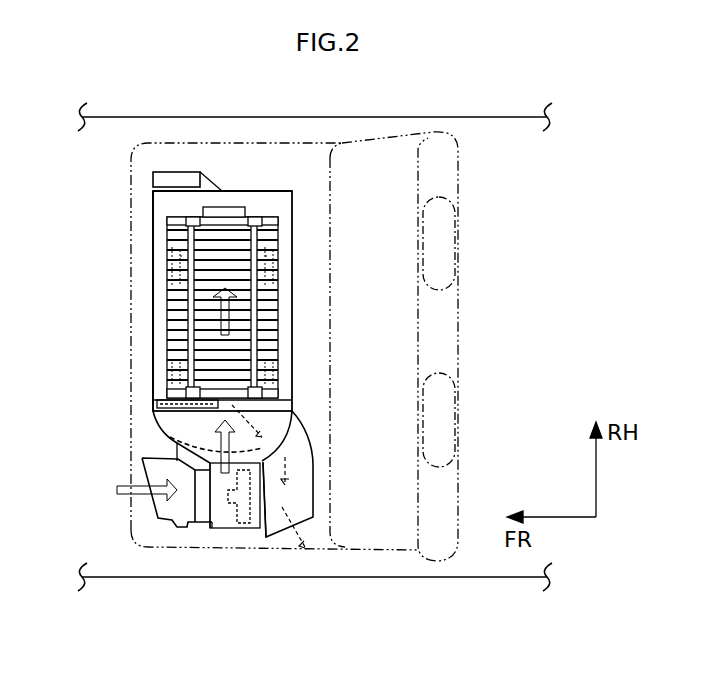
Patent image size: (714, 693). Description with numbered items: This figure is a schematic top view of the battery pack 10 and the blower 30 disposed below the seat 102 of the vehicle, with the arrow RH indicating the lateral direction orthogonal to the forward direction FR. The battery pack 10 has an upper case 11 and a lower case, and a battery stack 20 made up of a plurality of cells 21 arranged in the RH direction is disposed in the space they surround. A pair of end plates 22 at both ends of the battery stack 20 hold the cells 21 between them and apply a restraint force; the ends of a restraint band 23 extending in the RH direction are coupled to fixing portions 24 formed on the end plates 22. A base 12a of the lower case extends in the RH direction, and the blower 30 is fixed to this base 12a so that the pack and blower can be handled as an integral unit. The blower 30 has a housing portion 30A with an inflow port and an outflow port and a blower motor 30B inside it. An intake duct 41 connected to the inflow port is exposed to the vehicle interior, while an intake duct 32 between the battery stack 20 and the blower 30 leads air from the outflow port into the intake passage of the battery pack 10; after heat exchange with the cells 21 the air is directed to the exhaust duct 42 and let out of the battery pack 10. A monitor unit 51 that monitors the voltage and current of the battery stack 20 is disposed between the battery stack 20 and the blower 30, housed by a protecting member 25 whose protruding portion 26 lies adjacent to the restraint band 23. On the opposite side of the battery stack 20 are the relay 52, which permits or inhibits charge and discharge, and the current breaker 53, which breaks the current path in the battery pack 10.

The seat 102 is at (440, 143).
The battery pack 10 is at (153, 278).
The upper case 11 is at (153, 333).
The base 12a is at (176, 452).
The current breaker 53 is at (162, 181).
The relay 52 is at (236, 207).
The fixing portion 24 is at (190, 218).
The end plate 22 is at (175, 223).
The restraint band 23 is at (190, 346).
The battery stack 20 is at (167, 252).
The cell 21 is at (172, 303).
The monitor unit 51 is at (157, 403).
The protecting member 25 is at (178, 441).
The protruding portion 26 is at (166, 433).
The intake duct 32 is at (289, 434).
The exhaust duct 42 is at (307, 437).
The blower 30 is at (220, 518).
The housing portion 30A is at (208, 515).
The blower motor 30B is at (246, 521).
The intake duct 41 is at (152, 516).